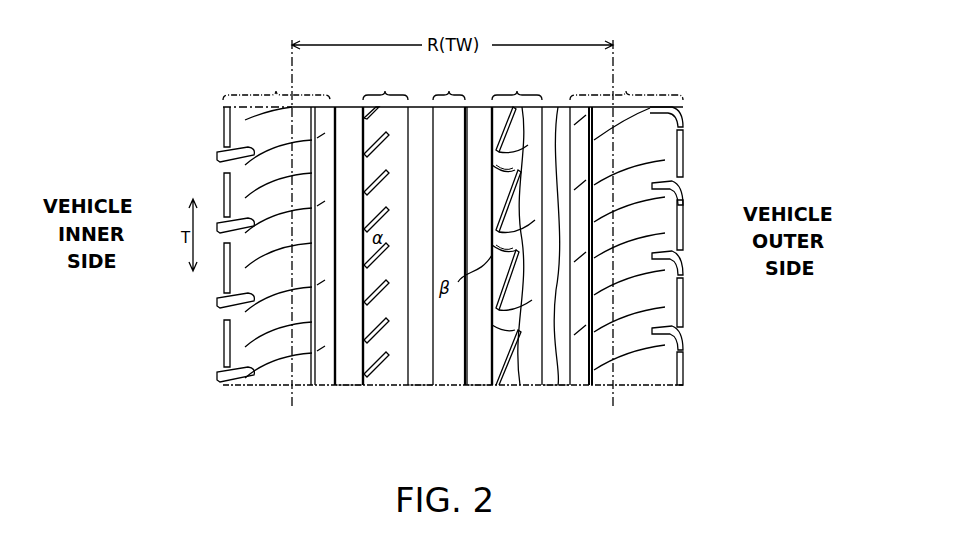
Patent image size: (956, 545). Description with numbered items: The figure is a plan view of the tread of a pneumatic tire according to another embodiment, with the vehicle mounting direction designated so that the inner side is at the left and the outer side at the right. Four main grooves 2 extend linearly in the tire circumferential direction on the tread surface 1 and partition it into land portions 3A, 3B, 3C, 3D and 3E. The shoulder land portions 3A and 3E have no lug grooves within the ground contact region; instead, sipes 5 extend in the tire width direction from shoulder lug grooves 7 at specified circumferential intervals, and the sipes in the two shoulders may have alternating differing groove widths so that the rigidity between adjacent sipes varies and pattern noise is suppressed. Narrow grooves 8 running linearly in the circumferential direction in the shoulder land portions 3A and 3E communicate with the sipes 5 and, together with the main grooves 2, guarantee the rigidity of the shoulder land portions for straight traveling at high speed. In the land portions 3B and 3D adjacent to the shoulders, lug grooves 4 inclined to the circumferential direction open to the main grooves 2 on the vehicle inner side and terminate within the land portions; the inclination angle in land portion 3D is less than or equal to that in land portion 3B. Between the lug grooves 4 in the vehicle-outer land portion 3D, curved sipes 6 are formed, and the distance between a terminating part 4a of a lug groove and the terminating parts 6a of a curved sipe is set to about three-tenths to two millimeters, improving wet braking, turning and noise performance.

The tread surface 1 is at (682, 80).
The main groove 2 is at (352, 392).
The shoulder land portion 3A is at (276, 227).
The land portion 3B is at (385, 227).
The land portion 3C is at (450, 227).
The land portion 3D is at (517, 227).
The shoulder land portion 3E is at (626, 227).
The lug groove 4 is at (382, 160).
The terminating part 4a is at (494, 167).
The sipe 5 is at (285, 142).
The curved sipe 6 is at (548, 390).
The terminating part 6a is at (553, 112).
The shoulder lug groove 7 is at (222, 152).
The narrow groove 8 is at (320, 390).